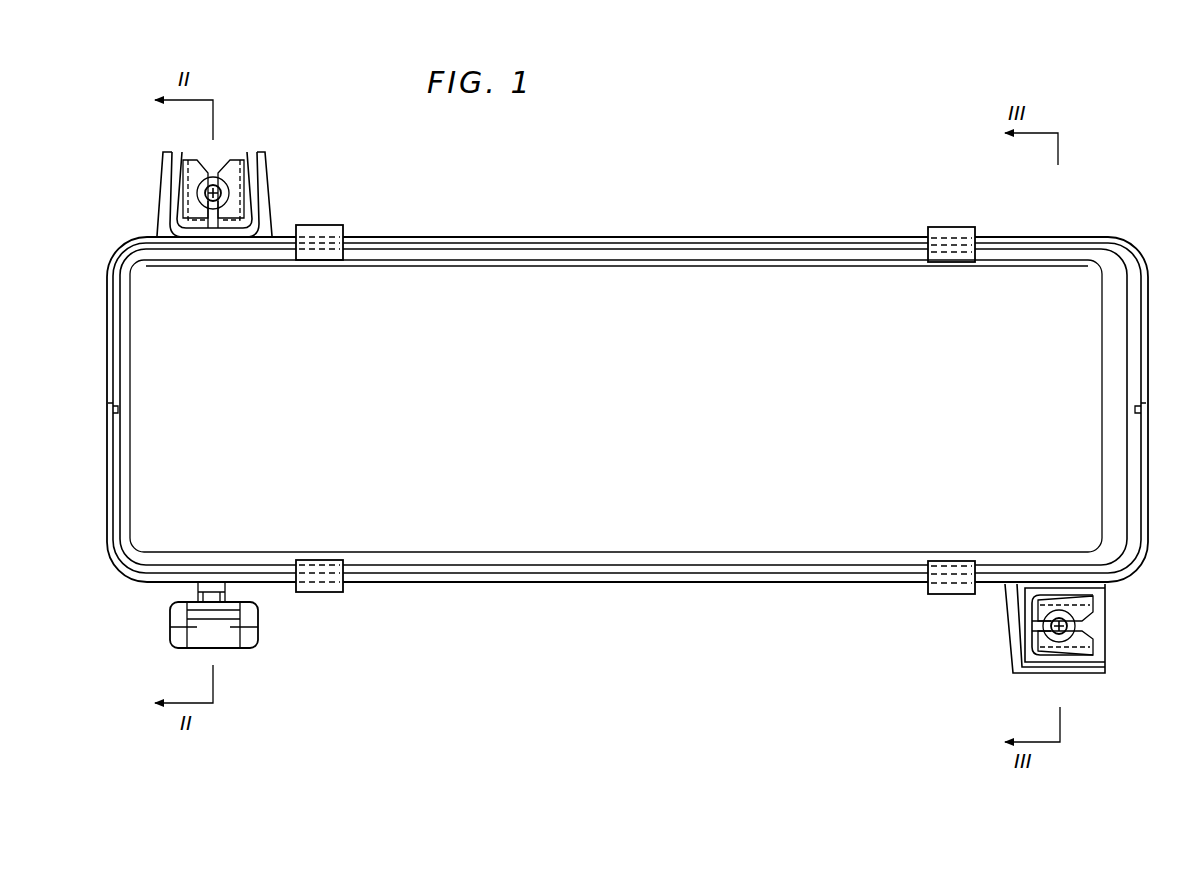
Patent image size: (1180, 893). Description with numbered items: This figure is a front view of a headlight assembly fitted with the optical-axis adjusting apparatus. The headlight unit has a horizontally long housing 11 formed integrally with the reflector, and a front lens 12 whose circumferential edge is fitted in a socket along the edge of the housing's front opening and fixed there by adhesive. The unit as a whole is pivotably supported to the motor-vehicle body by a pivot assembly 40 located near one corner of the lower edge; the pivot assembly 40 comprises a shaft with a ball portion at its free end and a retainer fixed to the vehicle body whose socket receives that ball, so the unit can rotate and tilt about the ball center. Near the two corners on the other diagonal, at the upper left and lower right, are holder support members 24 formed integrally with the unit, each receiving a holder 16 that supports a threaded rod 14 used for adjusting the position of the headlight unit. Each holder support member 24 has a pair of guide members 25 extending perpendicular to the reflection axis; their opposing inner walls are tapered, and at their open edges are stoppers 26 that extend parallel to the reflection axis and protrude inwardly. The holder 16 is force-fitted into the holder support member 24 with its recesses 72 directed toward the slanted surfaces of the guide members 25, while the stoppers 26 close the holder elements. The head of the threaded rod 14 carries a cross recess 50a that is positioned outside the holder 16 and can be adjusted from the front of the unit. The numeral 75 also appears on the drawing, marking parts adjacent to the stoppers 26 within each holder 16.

The housing 11 is at (648, 236).
The front lens 12 is at (765, 277).
The threaded rod 14 is at (226, 190).
The holder 16 is at (207, 155).
The holder support member 24 is at (156, 197).
The guide member 25 is at (177, 210).
The stopper 26 is at (188, 152).
The pivot assembly 40 is at (169, 646).
The cross recess 50a is at (231, 198).
The recess 72 is at (163, 172).
The spring member 75 is at (187, 158).